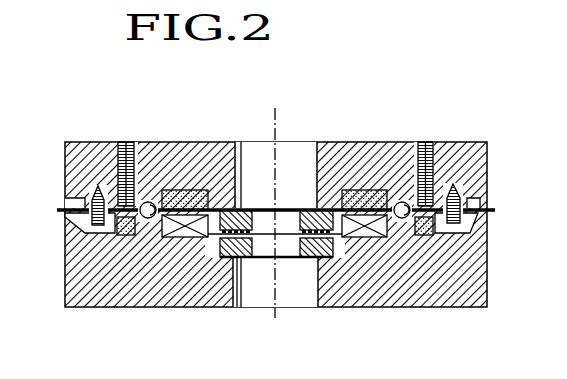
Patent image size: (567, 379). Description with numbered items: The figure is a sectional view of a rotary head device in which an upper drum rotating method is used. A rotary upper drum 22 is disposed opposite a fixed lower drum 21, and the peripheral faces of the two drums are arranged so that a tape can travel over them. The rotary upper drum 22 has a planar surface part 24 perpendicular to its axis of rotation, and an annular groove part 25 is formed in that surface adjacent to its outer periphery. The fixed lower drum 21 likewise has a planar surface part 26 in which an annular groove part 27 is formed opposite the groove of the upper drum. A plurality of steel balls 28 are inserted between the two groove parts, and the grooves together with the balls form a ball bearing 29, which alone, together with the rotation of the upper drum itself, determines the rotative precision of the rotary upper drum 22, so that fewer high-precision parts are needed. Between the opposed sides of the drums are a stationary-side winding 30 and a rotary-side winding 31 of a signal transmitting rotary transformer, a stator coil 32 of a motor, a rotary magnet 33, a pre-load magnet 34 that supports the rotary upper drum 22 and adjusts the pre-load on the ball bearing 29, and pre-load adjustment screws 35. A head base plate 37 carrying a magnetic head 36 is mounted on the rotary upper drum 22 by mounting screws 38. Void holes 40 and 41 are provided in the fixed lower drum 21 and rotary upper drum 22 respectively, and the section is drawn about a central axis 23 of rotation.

The fixed lower drum 21 is at (465, 283).
The rotary upper drum 22 is at (460, 150).
The center axis 23 is at (279, 200).
The planar surface part 24 is at (216, 200).
The annular groove part 25 is at (143, 200).
The planar surface part 26 is at (139, 247).
The annular groove part 27 is at (157, 240).
The steel balls 28 is at (150, 201).
The ball bearing 29 is at (407, 240).
The stationary-side winding 30 is at (221, 258).
The rotary-side winding 31 is at (307, 203).
The stator coil 32 is at (356, 275).
The rotary magnet 33 is at (349, 190).
The pre-load magnet 34 is at (90, 255).
The pre-load adjustment screws 35 is at (412, 192).
The magnetic head 36 is at (486, 207).
The head base plate 37 is at (478, 220).
The mounting screws 38 is at (485, 170).
The void hole 40 is at (295, 297).
The void hole 41 is at (250, 203).